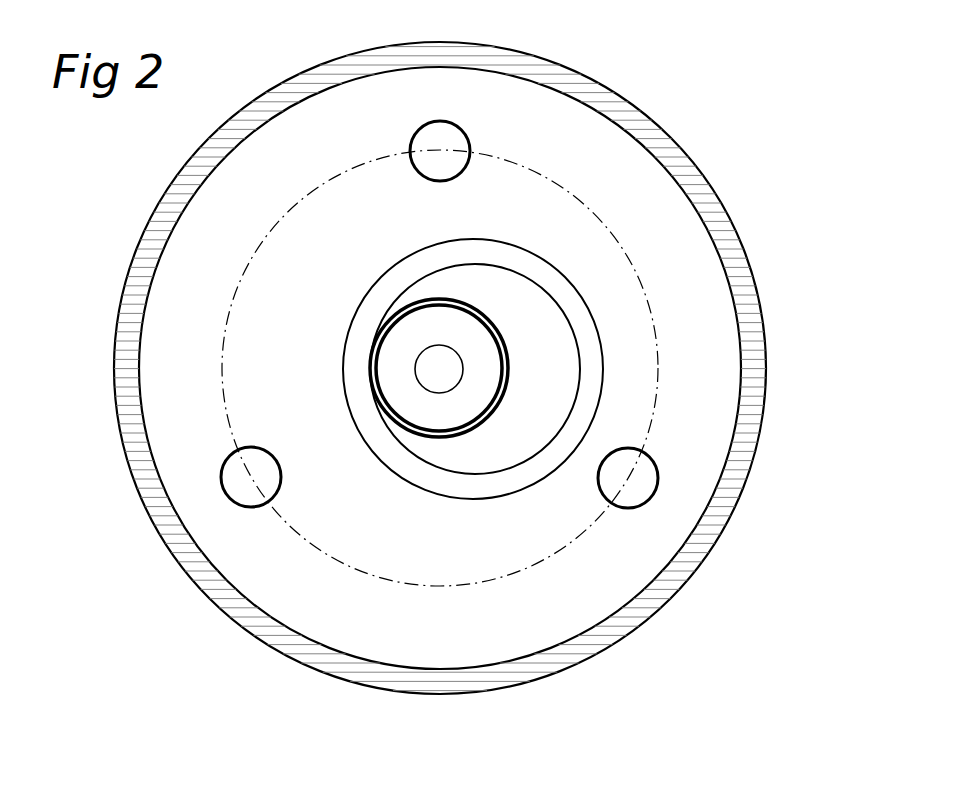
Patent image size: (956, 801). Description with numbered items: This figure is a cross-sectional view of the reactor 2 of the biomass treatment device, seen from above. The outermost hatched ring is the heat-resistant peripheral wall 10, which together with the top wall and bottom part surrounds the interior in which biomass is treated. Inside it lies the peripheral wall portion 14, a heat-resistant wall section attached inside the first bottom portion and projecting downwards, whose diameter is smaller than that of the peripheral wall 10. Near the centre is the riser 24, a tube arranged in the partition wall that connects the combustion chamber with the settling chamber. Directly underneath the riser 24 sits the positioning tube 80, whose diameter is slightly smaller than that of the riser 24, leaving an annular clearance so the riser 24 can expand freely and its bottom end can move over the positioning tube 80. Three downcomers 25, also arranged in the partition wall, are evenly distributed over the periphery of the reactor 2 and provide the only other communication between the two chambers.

The reactor 2 is at (780, 344).
The peripheral wall 10 is at (170, 233).
The peripheral wall portion 14 is at (582, 326).
The riser 24 is at (476, 306).
The downcomers 25 is at (468, 133).
The positioning tube 80 is at (418, 305).